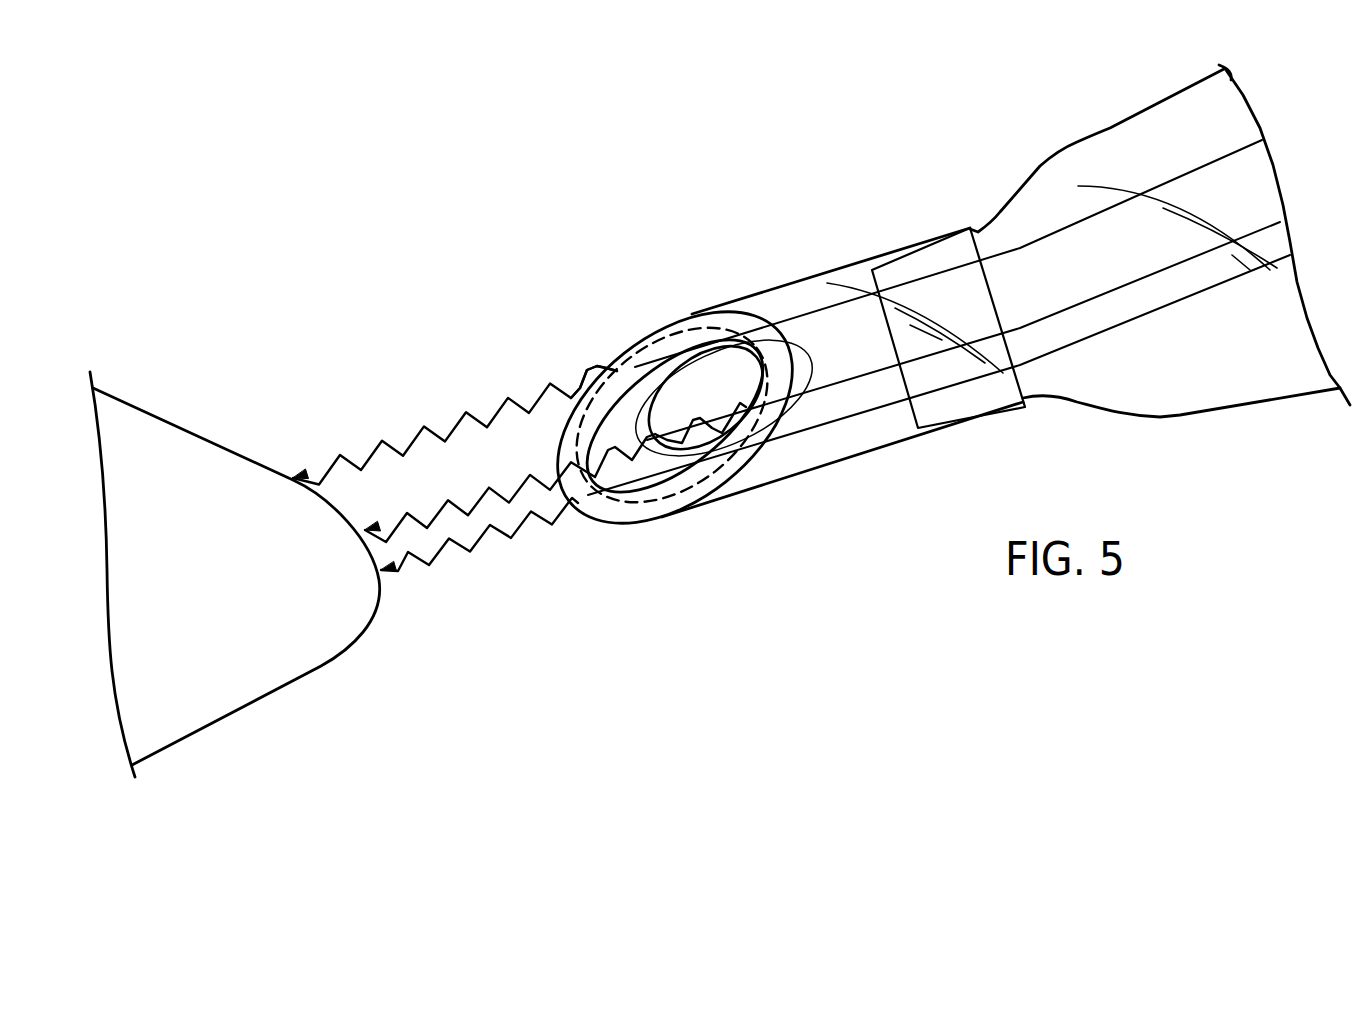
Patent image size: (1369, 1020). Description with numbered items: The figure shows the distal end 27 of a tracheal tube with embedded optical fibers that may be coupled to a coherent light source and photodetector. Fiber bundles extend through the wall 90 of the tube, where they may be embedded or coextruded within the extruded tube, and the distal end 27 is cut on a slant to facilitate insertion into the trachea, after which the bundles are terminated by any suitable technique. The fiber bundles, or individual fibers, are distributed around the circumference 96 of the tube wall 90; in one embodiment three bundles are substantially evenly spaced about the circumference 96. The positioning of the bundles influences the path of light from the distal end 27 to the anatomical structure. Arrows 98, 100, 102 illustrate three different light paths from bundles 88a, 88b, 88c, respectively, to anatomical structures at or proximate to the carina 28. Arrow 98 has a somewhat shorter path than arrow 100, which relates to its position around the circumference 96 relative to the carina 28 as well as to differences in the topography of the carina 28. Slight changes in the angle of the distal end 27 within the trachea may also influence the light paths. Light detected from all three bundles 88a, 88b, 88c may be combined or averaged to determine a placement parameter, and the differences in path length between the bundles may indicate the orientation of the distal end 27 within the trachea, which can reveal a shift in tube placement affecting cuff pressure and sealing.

The distal end 27 is at (540, 398).
The carina 28 is at (239, 568).
The fiber bundle 88a is at (829, 421).
The fiber bundle 88b is at (862, 380).
The fiber bundle 88c is at (816, 316).
The tube wall 90 is at (654, 340).
The circumference 96 is at (651, 504).
The arrow 98 is at (431, 562).
The arrow 100 is at (479, 496).
The arrow 102 is at (461, 415).